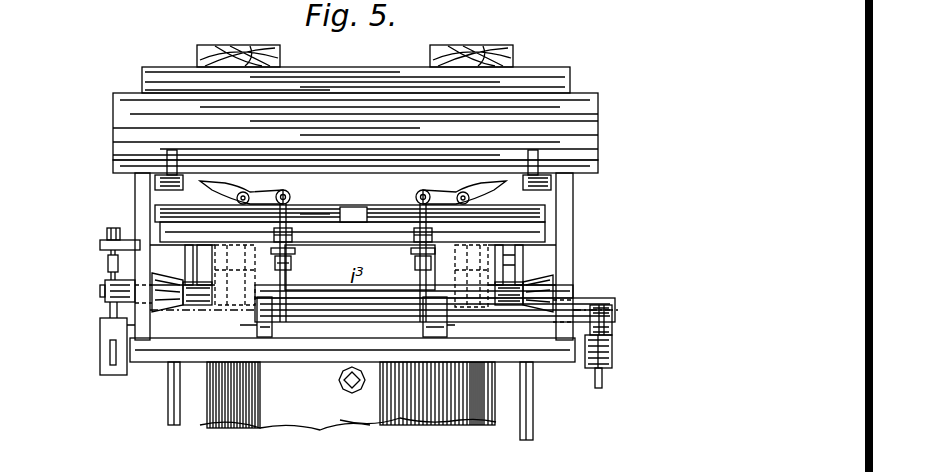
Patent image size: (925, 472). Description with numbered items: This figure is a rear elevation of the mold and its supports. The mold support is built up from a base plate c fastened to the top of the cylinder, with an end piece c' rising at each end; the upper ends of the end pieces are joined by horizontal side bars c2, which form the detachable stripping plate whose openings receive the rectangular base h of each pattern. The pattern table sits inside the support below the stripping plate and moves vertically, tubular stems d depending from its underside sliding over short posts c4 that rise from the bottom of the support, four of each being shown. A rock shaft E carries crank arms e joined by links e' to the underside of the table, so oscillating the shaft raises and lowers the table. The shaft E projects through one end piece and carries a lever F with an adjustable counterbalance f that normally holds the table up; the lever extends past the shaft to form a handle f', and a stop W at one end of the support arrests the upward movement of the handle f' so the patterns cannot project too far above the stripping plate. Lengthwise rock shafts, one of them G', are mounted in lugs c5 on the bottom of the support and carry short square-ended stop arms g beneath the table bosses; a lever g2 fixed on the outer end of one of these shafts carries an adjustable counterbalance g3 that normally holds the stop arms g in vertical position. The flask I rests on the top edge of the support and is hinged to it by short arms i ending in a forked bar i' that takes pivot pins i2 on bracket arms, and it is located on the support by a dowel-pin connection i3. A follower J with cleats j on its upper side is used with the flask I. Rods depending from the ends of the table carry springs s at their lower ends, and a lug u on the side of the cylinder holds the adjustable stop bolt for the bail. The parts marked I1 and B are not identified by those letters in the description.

The cleats j is at (513, 55).
The follower J is at (356, 69).
The flask I is at (598, 118).
The dowel-pin connection i3 is at (172, 165).
The lever arm I1 is at (243, 187).
The base portion h is at (316, 215).
The end piece c' is at (343, 253).
The side bars c2 is at (350, 214).
The stop W is at (108, 245).
The pivot pins i2 is at (353, 245).
The forked bar i' is at (353, 261).
The short arms i is at (291, 274).
The shaft E is at (103, 292).
The links e' is at (559, 247).
The crank arms e is at (552, 293).
The handle f' is at (94, 265).
The lever F is at (100, 330).
The counterbalance f is at (94, 352).
The short posts c4 is at (238, 324).
The rock shaft G' is at (398, 316).
The adjustable counterbalance g3 is at (612, 352).
The lever g2 is at (602, 385).
The base plate c is at (352, 369).
The lug u is at (345, 385).
The bed B is at (365, 425).
The tubular stems d is at (240, 297).
The stop arms g is at (277, 297).
The lugs c5 is at (295, 323).
The springs s is at (172, 428).